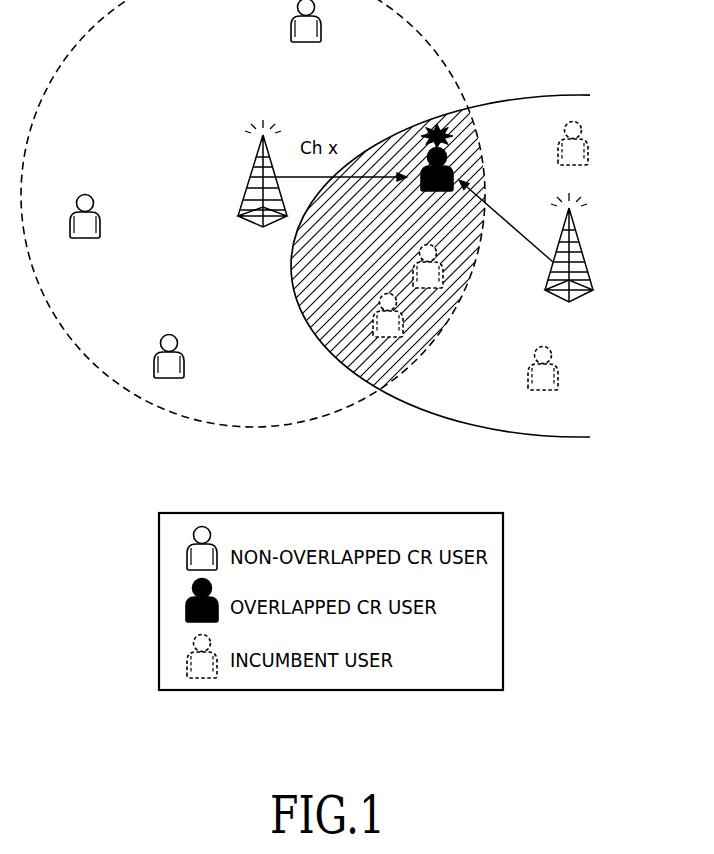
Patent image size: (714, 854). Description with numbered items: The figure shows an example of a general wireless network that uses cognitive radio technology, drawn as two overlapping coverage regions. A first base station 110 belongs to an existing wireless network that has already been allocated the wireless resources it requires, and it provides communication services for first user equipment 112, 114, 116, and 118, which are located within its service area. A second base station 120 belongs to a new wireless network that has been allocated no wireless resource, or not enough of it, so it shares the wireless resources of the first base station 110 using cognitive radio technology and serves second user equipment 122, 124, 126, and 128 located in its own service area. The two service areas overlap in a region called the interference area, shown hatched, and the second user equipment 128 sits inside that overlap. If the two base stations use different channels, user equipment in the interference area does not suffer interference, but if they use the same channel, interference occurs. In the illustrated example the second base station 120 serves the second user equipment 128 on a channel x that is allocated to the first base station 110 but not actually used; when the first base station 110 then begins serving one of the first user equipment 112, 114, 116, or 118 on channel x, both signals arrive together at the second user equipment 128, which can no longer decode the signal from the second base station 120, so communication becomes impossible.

The first base station 110 is at (583, 250).
The first user equipment 112 is at (371, 321).
The first user equipment 114 is at (413, 273).
The first user equipment 116 is at (589, 154).
The first user equipment 118 is at (559, 377).
The second base station 120 is at (251, 169).
The second user equipment 122 is at (101, 227).
The second user equipment 124 is at (185, 365).
The second user equipment 126 is at (322, 31).
The second user equipment 128 is at (436, 191).